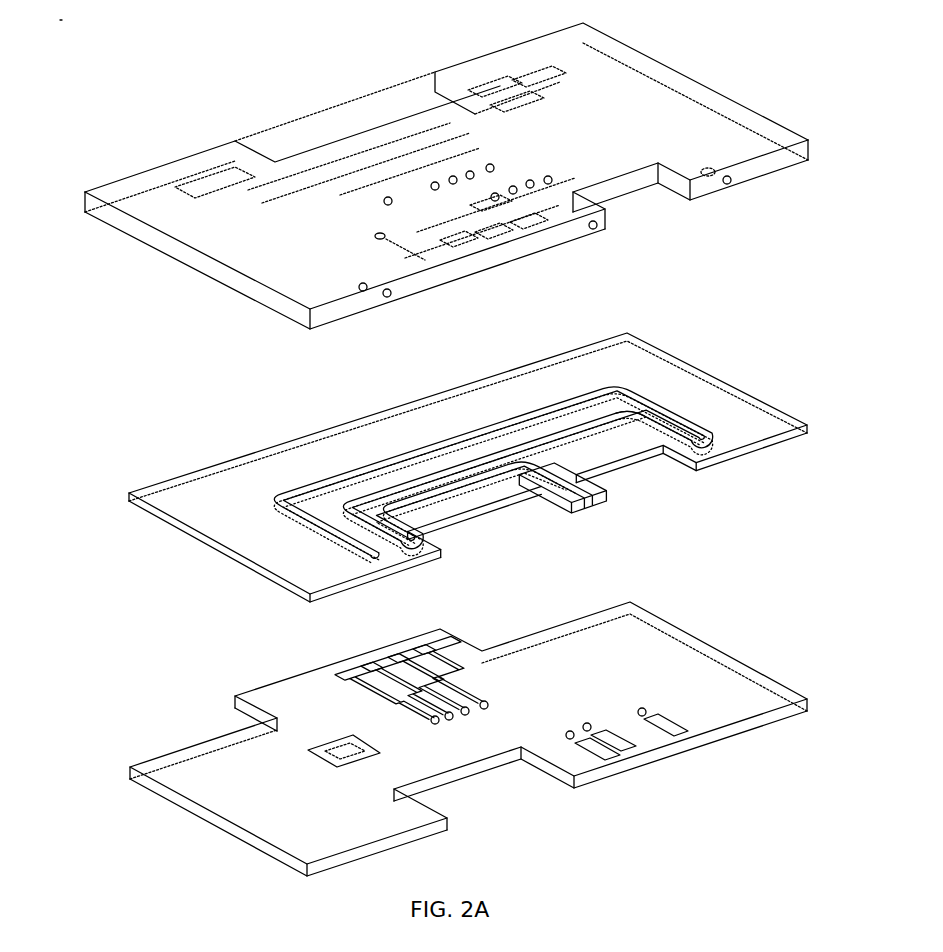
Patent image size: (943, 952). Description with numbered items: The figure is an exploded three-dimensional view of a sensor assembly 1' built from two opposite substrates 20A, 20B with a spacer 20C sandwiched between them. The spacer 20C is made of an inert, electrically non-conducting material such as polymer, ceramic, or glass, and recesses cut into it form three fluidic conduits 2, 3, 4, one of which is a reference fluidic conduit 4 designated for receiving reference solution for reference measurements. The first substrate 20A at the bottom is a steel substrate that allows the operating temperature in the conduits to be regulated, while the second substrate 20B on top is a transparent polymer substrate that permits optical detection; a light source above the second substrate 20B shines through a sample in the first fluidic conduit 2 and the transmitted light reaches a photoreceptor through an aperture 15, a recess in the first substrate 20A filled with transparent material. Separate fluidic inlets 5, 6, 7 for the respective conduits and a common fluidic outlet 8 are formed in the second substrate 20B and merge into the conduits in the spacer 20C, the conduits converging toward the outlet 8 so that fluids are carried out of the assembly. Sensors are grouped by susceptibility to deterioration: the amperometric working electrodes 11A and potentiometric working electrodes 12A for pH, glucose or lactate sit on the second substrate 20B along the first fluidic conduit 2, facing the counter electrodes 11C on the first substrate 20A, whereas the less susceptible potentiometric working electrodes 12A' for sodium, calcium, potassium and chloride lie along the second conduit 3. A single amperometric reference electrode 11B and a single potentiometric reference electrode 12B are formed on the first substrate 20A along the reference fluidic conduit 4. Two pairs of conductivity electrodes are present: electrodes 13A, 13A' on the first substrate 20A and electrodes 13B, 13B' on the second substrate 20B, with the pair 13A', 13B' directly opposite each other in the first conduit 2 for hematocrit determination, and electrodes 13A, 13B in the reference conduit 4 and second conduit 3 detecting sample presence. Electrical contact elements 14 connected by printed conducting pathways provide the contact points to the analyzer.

The sensor assembly 1' is at (68, 34).
The first substrate 20A is at (200, 743).
The second substrate 20B is at (205, 150).
The spacer 20C is at (263, 448).
The first fluidic conduit 2 is at (353, 469).
The second fluidic conduit 3 is at (521, 413).
The reference fluidic conduit 4 is at (622, 408).
The fluidic inlet 5 is at (366, 296).
The fluidic inlet 6 is at (389, 299).
The fluidic inlet 7 is at (590, 232).
The common fluidic outlet 8 is at (733, 180).
The amperometric working electrodes (AWE) 11A is at (467, 172).
The amperometric reference electrode (ARE) 11B is at (570, 740).
The amperometric counter electrodes (ACE) 11C is at (467, 715).
The potentiometric working electrodes (PWE) 12A is at (337, 153).
The potentiometric working electrodes (PWE) 12A' is at (576, 146).
The potentiometric reference electrode (PRE) 12B is at (585, 725).
The conductivity electrode 13A is at (659, 684).
The conductivity electrode 13A' is at (514, 714).
The conductivity electrode 13B is at (361, 241).
The conductivity electrode 13B' is at (501, 175).
The electrical contact elements 14 is at (490, 88).
The aperture 15 is at (345, 745).